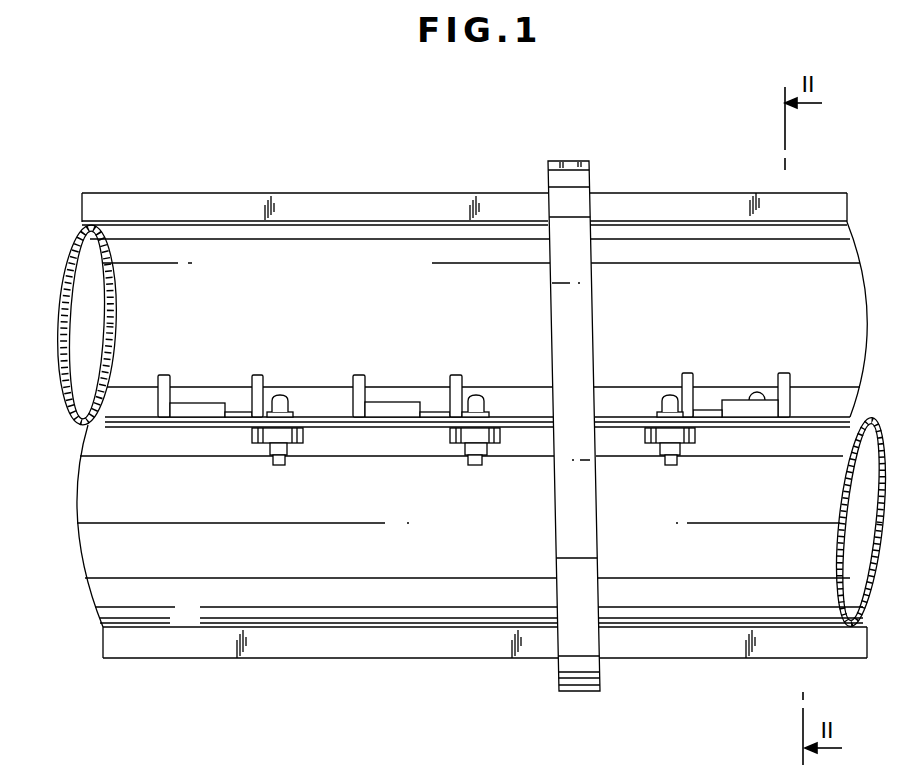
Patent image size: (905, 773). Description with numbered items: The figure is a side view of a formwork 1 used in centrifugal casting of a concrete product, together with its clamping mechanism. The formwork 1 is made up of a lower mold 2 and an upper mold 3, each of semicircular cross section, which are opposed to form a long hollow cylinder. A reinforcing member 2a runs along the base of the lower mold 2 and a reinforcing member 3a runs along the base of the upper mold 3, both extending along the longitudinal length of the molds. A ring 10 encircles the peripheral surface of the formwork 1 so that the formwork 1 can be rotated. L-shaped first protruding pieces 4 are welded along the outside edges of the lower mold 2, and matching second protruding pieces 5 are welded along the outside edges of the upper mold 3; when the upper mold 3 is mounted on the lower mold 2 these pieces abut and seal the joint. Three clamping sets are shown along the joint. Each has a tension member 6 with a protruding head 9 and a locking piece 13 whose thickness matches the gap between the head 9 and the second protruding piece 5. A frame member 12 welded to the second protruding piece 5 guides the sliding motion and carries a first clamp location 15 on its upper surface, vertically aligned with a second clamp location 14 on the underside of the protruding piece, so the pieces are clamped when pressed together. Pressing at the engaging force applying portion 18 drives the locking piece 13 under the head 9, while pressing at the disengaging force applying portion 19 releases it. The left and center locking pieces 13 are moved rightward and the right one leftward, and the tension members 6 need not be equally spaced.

The formwork 1 is at (281, 668).
The lower mold 2 is at (187, 618).
The reinforcing member 2a is at (482, 656).
The upper mold 3 is at (223, 232).
The reinforcing member 3a is at (406, 203).
The first protruding piece 4 is at (193, 428).
The second protruding piece 5 is at (110, 422).
The tension member 6 is at (286, 463).
The protruding head 9 is at (274, 395).
The ring 10 is at (563, 167).
The frame member 12 is at (422, 408).
The locking piece 13 is at (292, 413).
The second clamp location 14 is at (742, 428).
The first clamp location 15 is at (763, 402).
The engaging force applying portion 18 is at (256, 374).
The disengaging force applying portion 19 is at (172, 385).